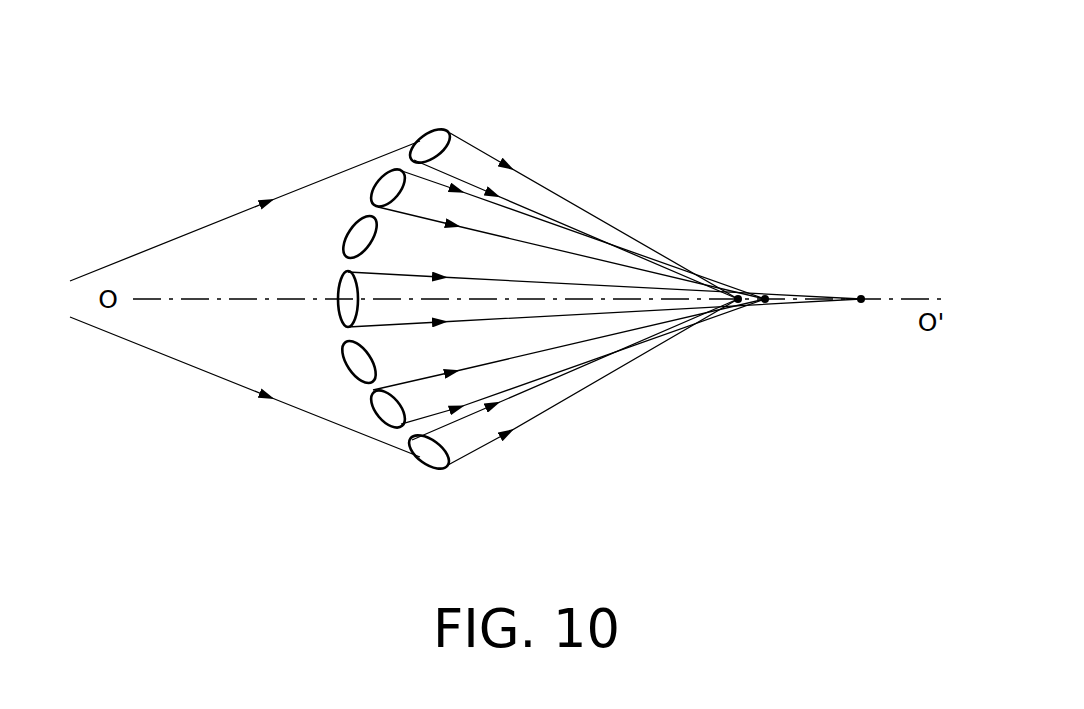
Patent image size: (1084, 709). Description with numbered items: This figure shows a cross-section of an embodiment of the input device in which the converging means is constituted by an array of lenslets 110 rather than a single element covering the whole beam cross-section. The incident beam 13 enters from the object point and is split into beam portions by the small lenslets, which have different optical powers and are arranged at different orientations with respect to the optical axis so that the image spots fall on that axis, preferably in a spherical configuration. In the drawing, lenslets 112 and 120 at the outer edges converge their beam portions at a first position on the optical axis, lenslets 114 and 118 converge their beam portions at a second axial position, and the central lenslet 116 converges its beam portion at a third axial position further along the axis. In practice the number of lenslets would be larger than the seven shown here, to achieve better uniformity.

The light beam 13 is at (205, 340).
The lens array 110 is at (369, 295).
The lenslet 112 is at (430, 146).
The lenslet 114 is at (388, 188).
The lenslet 116 is at (347, 305).
The lenslet 118 is at (390, 412).
The lenslet 120 is at (431, 457).